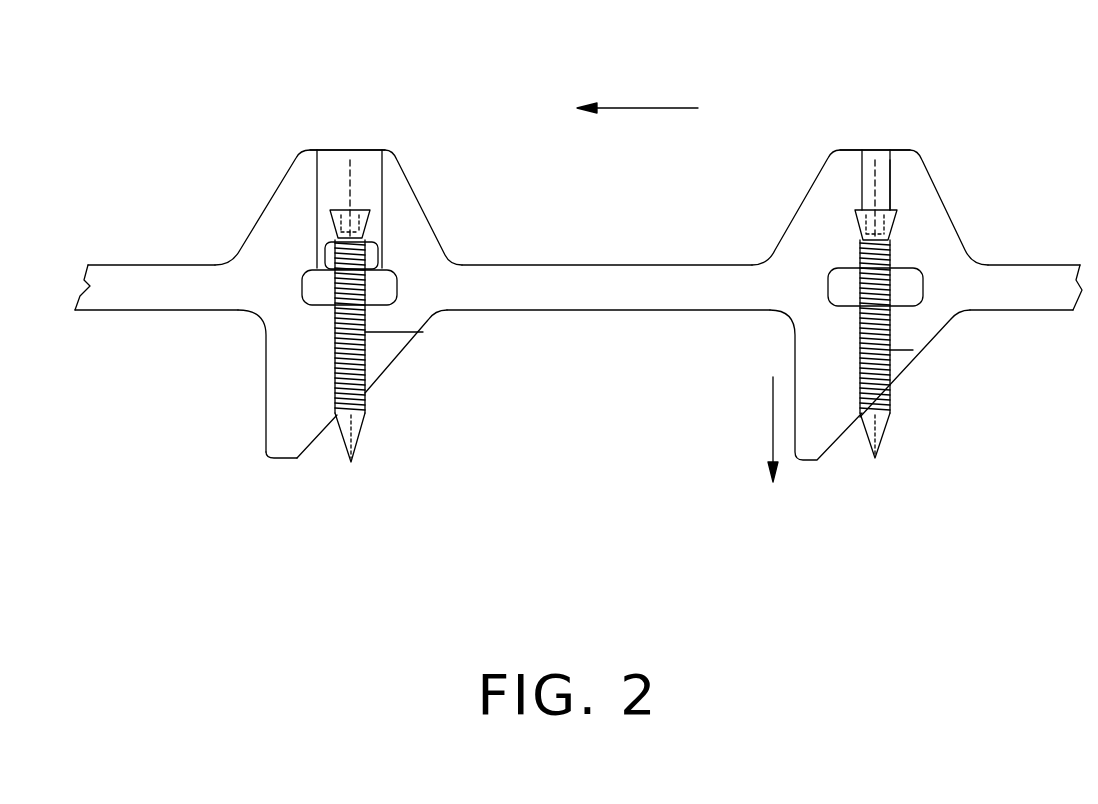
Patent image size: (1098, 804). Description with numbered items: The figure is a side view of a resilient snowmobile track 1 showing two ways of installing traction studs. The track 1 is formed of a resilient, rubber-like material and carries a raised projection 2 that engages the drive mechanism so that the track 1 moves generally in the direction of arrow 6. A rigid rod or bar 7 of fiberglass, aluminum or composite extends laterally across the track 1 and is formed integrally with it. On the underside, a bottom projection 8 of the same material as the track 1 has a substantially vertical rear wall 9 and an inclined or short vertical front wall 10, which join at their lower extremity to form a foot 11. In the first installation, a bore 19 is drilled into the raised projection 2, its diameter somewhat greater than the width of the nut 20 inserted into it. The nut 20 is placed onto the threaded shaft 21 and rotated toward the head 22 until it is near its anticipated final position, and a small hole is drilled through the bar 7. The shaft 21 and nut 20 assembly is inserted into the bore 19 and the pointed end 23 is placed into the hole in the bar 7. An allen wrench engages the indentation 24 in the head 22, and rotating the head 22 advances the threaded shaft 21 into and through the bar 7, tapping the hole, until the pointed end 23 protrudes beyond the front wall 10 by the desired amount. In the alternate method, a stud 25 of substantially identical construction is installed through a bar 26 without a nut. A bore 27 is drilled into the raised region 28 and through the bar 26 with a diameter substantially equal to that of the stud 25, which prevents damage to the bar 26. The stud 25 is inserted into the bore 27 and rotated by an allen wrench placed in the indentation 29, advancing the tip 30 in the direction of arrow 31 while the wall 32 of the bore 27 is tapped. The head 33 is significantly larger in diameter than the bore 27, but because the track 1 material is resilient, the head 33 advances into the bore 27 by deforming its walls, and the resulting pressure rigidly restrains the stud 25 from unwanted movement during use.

The snowmobile track 1 is at (625, 282).
The raised projection 2 is at (402, 197).
The arrow 6 is at (638, 108).
The rigid rod or bar 7 is at (385, 283).
The bottom projection 8 is at (280, 427).
The rear wall 9 is at (267, 388).
The front wall 10 is at (383, 372).
The foot 11 is at (275, 458).
The bore 19 is at (327, 165).
The nut 20 is at (322, 248).
The threaded shaft 21 is at (418, 333).
The head 22 is at (366, 168).
The pointed end 23 is at (352, 462).
The indentation 24 is at (340, 212).
The stud 25 is at (913, 350).
The bar 26 is at (910, 290).
The bore 27 is at (870, 160).
The raised region 28 is at (930, 192).
The indentation 29 is at (888, 207).
The tip 30 is at (875, 460).
The arrow 31 is at (770, 420).
The wall 32 is at (886, 160).
The head 33 is at (860, 208).